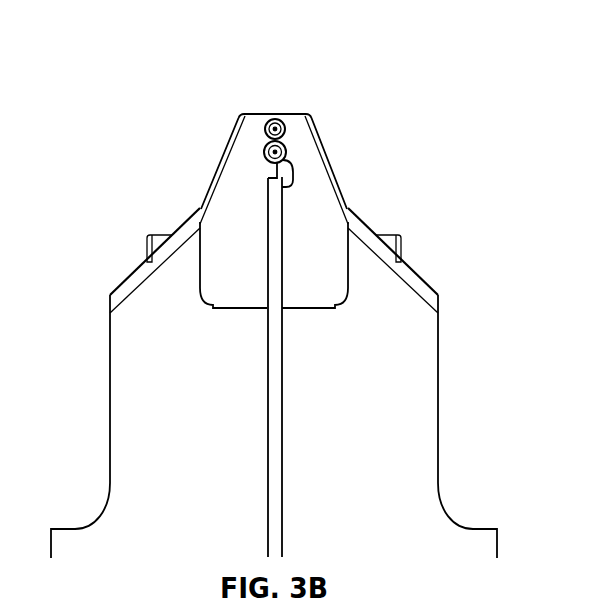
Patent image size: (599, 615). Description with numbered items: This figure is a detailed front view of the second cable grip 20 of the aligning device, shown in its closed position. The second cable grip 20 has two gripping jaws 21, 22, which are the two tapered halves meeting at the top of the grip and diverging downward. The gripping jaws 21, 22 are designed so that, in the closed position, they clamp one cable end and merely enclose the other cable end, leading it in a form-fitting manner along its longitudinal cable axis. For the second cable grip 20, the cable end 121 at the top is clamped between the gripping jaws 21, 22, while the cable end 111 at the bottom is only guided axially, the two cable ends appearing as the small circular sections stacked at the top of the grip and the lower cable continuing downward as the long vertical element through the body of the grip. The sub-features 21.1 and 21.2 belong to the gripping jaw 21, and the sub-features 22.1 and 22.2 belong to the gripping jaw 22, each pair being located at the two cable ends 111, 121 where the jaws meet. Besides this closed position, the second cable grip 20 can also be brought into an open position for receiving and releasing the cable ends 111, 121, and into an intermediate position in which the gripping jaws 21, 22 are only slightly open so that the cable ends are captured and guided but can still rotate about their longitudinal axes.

The second cable grip 20 is at (272, 288).
The gripping jaw 21 is at (243, 187).
The lower joint of first jaw 21.1 is at (263, 152).
The upper joint of first jaw 21.2 is at (263, 128).
The gripping jaw 22 is at (305, 183).
The lower joint of second jaw 22.1 is at (288, 151).
The upper joint of second jaw 22.2 is at (291, 116).
The cable end 111 is at (287, 142).
The cable end 121 is at (275, 118).